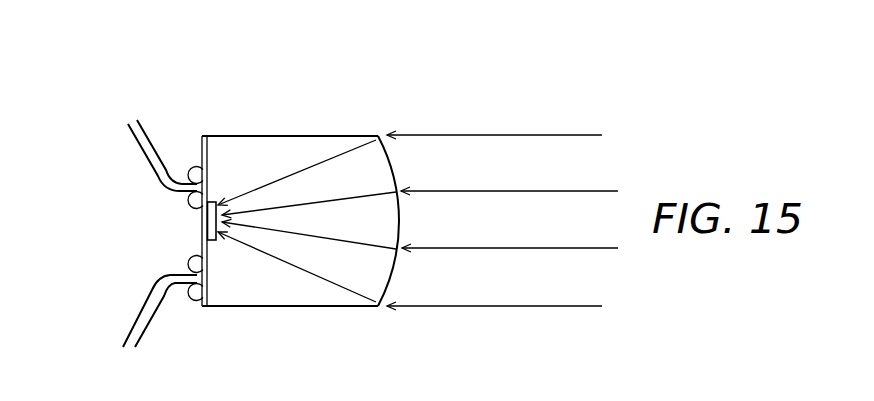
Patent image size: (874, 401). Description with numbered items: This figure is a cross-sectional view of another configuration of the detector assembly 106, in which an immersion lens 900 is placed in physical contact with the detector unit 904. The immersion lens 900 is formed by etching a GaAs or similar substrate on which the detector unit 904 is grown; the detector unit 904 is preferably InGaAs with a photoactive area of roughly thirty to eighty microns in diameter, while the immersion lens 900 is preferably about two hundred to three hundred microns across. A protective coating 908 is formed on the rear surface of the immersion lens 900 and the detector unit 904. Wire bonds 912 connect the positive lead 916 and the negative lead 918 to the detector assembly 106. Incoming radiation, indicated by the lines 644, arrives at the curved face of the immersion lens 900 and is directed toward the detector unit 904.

The detector assembly 106 is at (297, 104).
The immersion lens 900 is at (378, 135).
The protective coating 908 is at (201, 148).
The detector unit 904 is at (217, 241).
The wire bonds 912 is at (188, 259).
The positive lead 916 is at (150, 166).
The negative lead 918 is at (126, 340).
The dotted lines 644 is at (483, 308).